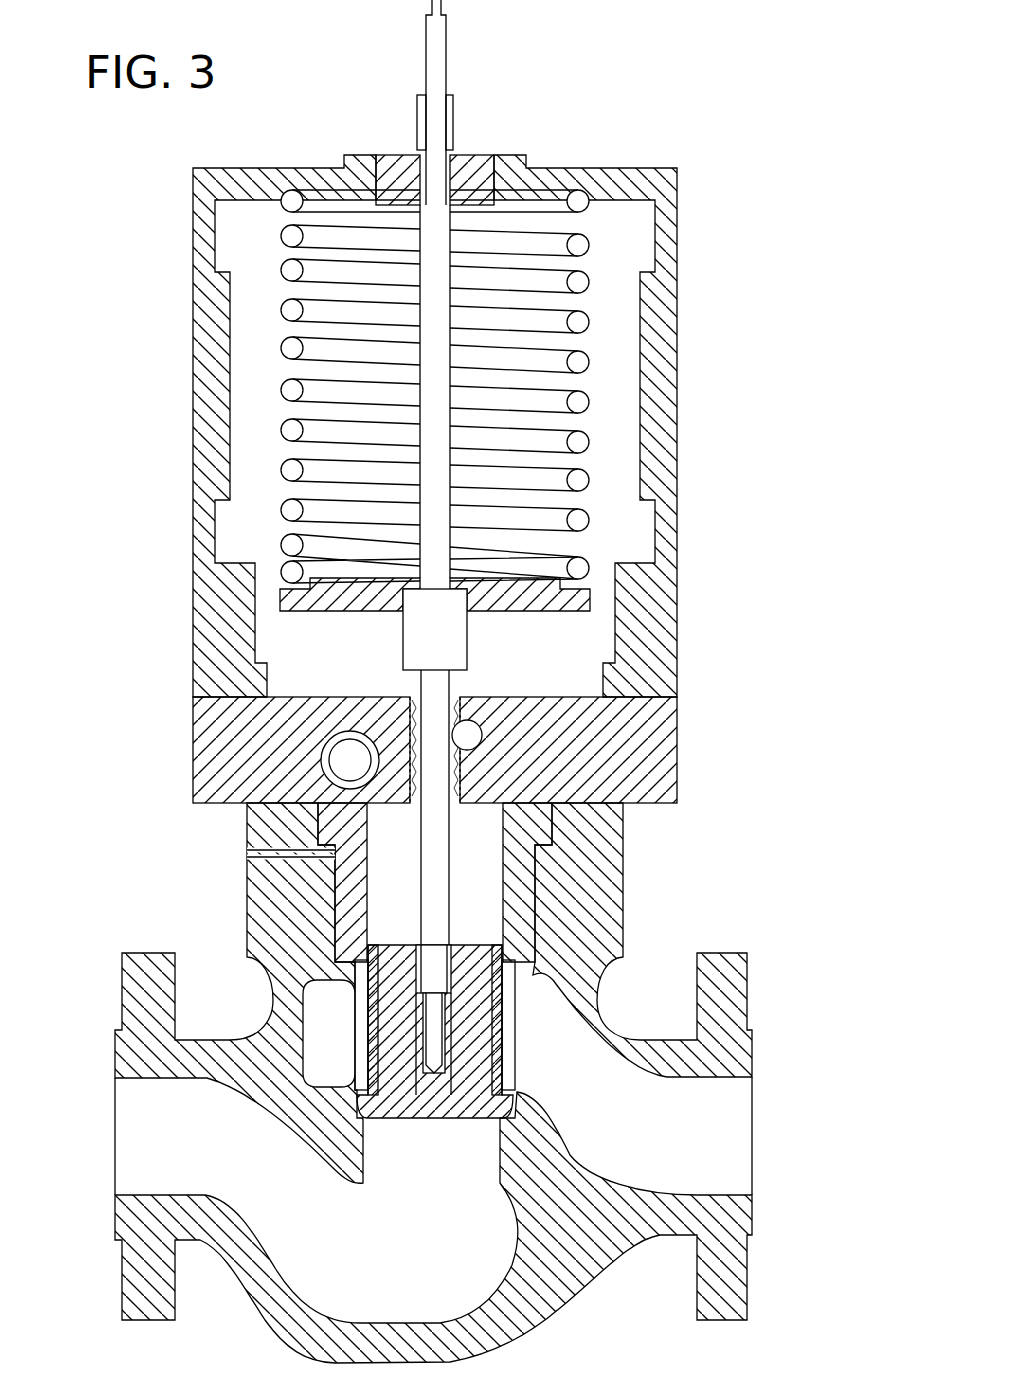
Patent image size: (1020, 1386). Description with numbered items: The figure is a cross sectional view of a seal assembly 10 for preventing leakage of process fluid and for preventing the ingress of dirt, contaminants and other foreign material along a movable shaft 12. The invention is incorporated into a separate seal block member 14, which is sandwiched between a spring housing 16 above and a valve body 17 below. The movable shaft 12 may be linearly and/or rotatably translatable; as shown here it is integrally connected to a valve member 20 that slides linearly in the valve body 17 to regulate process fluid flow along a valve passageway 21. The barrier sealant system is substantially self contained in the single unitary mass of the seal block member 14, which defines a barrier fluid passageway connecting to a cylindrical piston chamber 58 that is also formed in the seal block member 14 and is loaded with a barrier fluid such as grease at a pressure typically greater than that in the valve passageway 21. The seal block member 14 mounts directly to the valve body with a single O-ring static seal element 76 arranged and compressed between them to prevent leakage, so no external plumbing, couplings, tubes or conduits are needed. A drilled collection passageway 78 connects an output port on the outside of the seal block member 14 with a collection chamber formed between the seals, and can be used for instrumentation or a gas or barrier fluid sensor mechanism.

The seal assembly 10 is at (490, 690).
The movable shaft 12 is at (430, 690).
The seal block member 14 is at (665, 752).
The spring housing 16 is at (680, 472).
The valve body 17 is at (587, 878).
The valve member 20 is at (497, 1085).
The valve passageway 21 is at (720, 1138).
The cylindrical piston chamber 58 is at (350, 763).
The O-ring static seal element 76 is at (598, 823).
The drilled collection passageway 78 is at (470, 735).